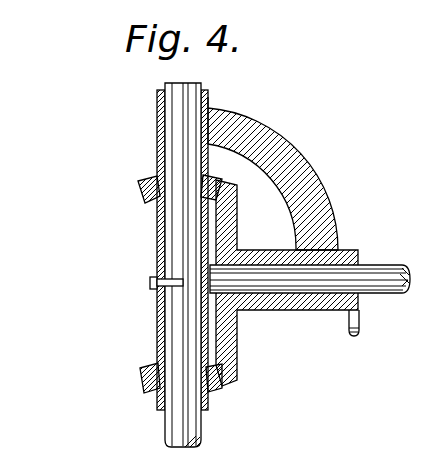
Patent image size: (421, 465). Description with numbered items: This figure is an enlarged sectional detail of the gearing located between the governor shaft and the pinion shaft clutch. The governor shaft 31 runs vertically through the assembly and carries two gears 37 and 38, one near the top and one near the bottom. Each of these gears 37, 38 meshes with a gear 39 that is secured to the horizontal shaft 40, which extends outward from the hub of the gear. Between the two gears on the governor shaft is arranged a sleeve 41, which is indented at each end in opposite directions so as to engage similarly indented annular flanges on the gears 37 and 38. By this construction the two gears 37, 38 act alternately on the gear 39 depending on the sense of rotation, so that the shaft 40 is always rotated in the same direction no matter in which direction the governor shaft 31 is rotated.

The shaft 31 is at (183, 419).
The gear 37 is at (140, 189).
The gear 38 is at (143, 374).
The gear 39 is at (232, 225).
The shaft 40 is at (384, 265).
The sleeve 41 is at (157, 257).